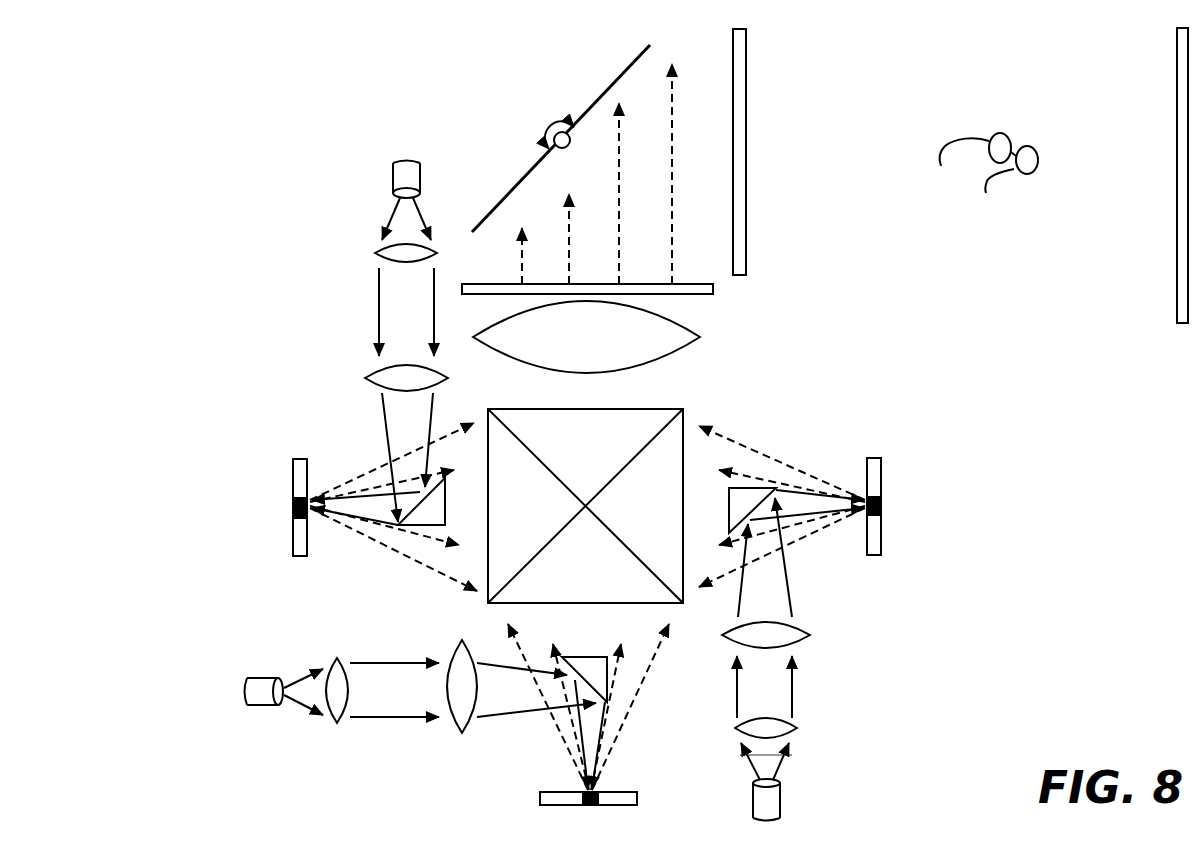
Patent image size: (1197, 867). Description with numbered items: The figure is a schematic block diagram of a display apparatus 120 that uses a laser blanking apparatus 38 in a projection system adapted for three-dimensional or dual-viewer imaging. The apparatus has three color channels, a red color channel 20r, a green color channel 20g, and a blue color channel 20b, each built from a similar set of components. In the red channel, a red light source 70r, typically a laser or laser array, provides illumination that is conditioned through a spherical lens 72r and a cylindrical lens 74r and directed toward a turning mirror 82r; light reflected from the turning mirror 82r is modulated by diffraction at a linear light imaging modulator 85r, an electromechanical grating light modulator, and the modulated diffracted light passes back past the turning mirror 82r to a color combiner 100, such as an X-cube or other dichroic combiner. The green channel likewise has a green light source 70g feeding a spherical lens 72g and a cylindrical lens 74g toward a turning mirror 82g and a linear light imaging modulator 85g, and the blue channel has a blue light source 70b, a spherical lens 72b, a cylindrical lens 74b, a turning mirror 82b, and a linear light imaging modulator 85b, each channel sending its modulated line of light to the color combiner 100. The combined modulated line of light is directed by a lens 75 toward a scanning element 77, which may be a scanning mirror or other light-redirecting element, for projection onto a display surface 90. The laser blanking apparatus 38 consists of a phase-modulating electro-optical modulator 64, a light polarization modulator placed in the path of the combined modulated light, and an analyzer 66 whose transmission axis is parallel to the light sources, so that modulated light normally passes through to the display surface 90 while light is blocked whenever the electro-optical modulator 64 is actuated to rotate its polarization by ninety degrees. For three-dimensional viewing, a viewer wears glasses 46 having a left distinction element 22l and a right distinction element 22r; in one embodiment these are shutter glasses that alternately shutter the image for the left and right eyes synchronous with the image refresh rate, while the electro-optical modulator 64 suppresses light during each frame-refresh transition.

The display apparatus 120 is at (333, 115).
The blue color channel 20b is at (432, 170).
The blue light source 70b is at (391, 175).
The spherical lens 72b is at (375, 253).
The cylindrical lens 74b is at (365, 378).
The turning mirror 82b is at (462, 513).
The linear light imaging modulator 85b is at (293, 462).
The green color channel 20g is at (270, 596).
The green light source 70g is at (245, 688).
The spherical lens 72g is at (333, 660).
The cylindrical lens 74g is at (455, 645).
The turning mirror 82g is at (575, 657).
The linear light imaging modulator 85g is at (548, 790).
The red color channel 20r is at (902, 631).
The red light source 70r is at (782, 805).
The spherical lens 72r is at (797, 728).
The cylindrical lens 74r is at (810, 635).
The turning mirror 82r is at (729, 522).
The linear light imaging modulator 85r is at (881, 503).
The color combiner 100 is at (655, 408).
The lens 75 is at (703, 332).
The electro-optical modulator 64 is at (500, 282).
The scanning element 77 is at (610, 85).
The analyzer 66 is at (747, 82).
The laser blanking apparatus 38 is at (780, 142).
The glasses 46 is at (994, 136).
The left distinction element 22l is at (1007, 135).
The right distinction element 22r is at (1040, 152).
The display surface 90 is at (1177, 176).